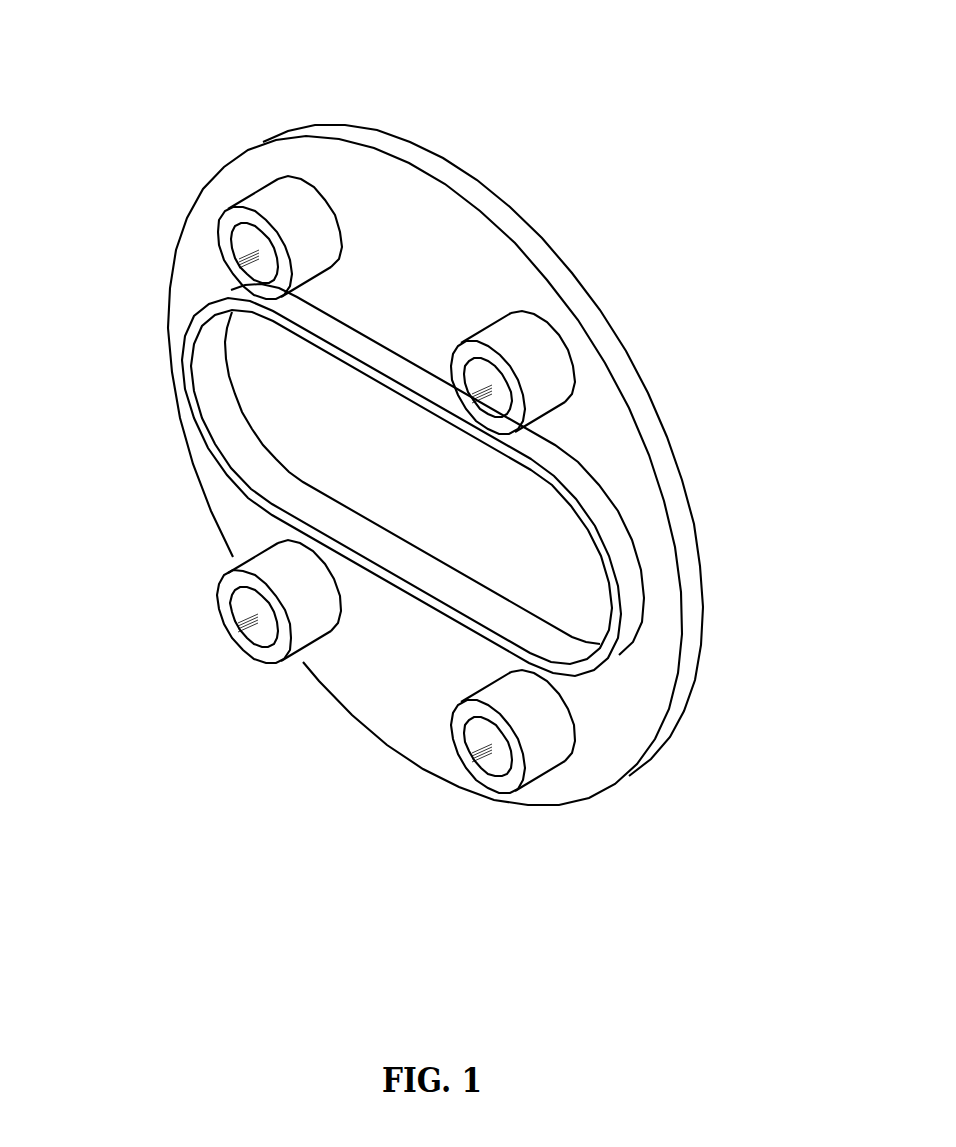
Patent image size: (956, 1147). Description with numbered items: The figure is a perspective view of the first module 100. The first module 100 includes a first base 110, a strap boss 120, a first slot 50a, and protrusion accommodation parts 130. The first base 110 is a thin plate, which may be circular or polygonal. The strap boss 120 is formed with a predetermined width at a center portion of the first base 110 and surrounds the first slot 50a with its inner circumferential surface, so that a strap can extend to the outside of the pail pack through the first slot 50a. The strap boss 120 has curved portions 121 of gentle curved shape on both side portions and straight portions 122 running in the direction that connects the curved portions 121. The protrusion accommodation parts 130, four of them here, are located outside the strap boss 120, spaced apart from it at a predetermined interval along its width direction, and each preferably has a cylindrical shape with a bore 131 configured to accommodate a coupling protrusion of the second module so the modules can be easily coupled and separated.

The first module 100 is at (718, 232).
The first base 110 is at (473, 290).
The strap boss 120 is at (220, 458).
The curved portions 121 is at (206, 363).
The straight portions 122 is at (372, 357).
The protrusion accommodation part 130 is at (308, 217).
The bore 131 is at (233, 257).
The first slot 50a is at (590, 578).